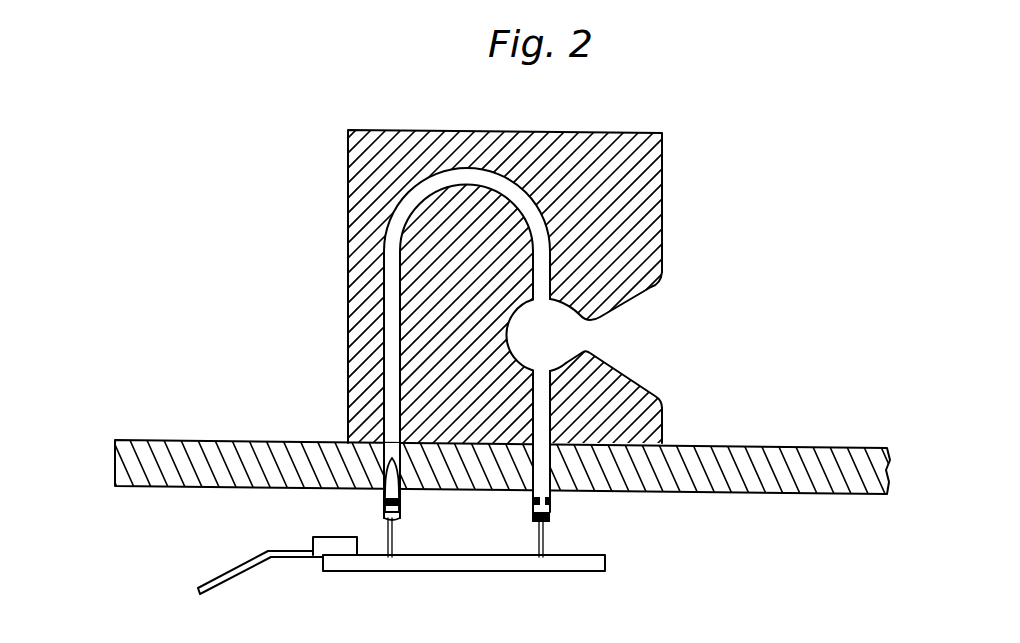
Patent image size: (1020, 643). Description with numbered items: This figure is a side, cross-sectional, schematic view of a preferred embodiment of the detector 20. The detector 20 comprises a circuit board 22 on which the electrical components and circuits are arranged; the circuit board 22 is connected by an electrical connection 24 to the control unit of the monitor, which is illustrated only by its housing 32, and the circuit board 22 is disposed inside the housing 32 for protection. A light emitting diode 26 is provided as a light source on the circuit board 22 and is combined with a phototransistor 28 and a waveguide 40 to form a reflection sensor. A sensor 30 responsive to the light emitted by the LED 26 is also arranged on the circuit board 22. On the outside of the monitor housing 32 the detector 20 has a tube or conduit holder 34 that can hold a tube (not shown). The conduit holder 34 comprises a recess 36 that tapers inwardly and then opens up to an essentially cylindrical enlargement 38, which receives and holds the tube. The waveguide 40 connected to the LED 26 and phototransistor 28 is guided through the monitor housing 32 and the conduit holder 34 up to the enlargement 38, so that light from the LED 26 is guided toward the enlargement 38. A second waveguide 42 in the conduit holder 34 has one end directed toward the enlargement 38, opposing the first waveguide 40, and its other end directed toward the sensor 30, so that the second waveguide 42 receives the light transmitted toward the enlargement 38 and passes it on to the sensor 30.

The detector 20 is at (507, 302).
The circuit board 22 is at (584, 573).
The electrical connection 24 is at (236, 566).
The light emitting diode (LED) 26 is at (551, 524).
The phototransistor 28 is at (551, 499).
The sensor 30 is at (383, 510).
The monitor housing 32 is at (240, 441).
The conduit holder 34 is at (347, 277).
The recess 36 is at (650, 284).
The enlargement 38 is at (547, 335).
The waveguide 40 is at (550, 393).
The second waveguide 42 is at (453, 170).